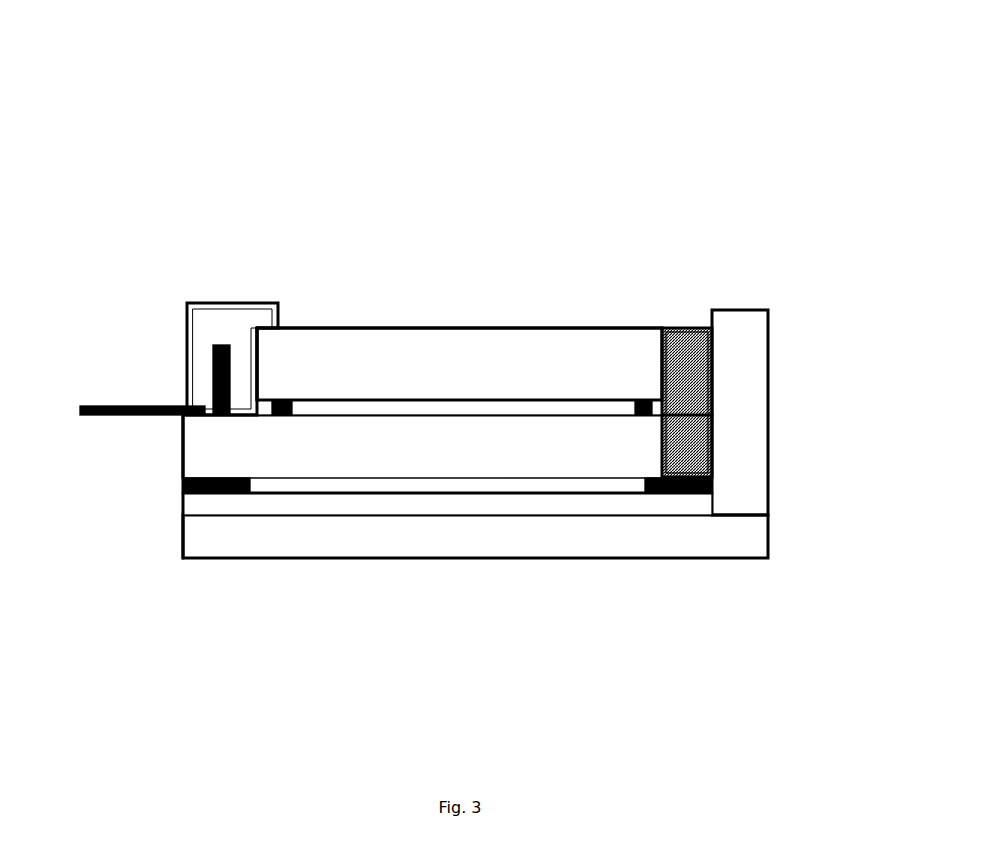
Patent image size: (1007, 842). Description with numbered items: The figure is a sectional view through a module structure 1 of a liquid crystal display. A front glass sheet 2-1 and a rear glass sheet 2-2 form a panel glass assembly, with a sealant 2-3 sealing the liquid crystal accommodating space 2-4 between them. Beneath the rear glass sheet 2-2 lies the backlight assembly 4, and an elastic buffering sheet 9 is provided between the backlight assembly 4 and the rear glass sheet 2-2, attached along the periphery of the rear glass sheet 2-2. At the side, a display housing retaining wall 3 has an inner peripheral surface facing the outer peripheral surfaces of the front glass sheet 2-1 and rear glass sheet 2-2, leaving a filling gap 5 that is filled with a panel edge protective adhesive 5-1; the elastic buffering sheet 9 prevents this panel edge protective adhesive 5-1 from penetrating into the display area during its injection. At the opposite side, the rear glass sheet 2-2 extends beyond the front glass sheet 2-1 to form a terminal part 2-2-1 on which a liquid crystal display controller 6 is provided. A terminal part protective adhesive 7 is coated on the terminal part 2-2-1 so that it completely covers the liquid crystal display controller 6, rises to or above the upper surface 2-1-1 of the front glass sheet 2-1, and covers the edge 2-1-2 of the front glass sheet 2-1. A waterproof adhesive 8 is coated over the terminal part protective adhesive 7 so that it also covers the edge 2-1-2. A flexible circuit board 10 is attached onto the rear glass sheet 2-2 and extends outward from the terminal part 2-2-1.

The module structure 1 is at (660, 107).
The front glass sheet 2-1 is at (437, 360).
The upper surface 2-1-1 is at (405, 327).
The edge 2-1-2 is at (258, 358).
The rear glass sheet 2-2 is at (452, 447).
The terminal part 2-2-1 is at (215, 447).
The sealant 2-3 is at (280, 402).
The liquid crystal accommodating space 2-4 is at (578, 407).
The display housing retaining wall 3 is at (752, 448).
The backlight assembly 4 is at (570, 505).
The filling gap 5 is at (698, 328).
The panel edge protective adhesive 5-1 is at (687, 408).
The liquid crystal display controller 6 is at (218, 345).
The terminal part protective adhesive 7 is at (215, 303).
The waterproof adhesive 8 is at (195, 303).
The elastic buffering sheet 9 is at (212, 498).
The flexible circuit board 10 is at (112, 407).